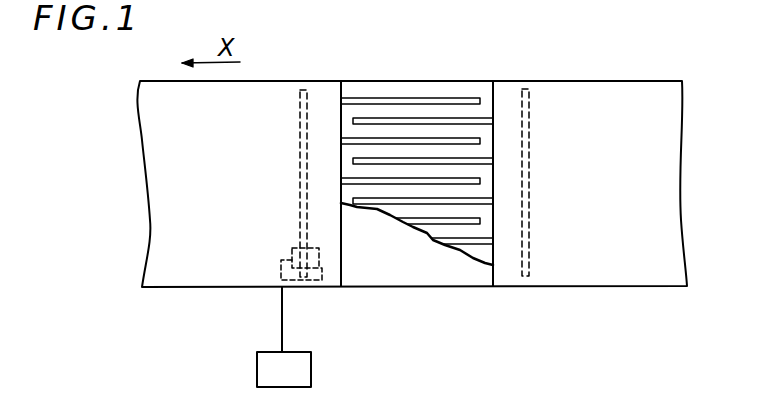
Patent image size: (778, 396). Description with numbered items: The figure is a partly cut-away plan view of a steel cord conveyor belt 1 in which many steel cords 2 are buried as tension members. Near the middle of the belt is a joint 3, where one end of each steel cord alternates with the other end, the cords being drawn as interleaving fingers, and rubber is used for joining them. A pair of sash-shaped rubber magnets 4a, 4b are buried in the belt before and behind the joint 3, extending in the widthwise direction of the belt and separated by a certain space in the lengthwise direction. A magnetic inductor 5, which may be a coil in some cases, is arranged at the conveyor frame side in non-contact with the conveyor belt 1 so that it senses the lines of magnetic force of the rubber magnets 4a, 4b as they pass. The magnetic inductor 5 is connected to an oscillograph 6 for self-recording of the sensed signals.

The steel cord conveyor belt 1 is at (605, 81).
The steel cords 2 is at (420, 98).
The joint 3 is at (365, 81).
The rubber magnet 4a is at (302, 147).
The rubber magnet 4b is at (531, 110).
The magnetic inductor 5 is at (322, 280).
The oscillograph 6 is at (311, 367).